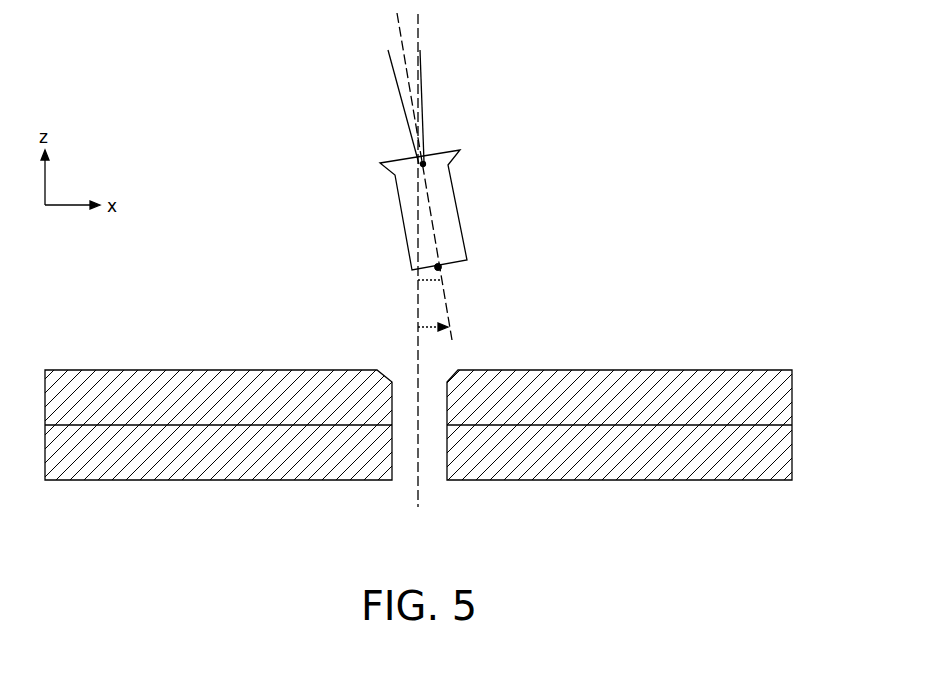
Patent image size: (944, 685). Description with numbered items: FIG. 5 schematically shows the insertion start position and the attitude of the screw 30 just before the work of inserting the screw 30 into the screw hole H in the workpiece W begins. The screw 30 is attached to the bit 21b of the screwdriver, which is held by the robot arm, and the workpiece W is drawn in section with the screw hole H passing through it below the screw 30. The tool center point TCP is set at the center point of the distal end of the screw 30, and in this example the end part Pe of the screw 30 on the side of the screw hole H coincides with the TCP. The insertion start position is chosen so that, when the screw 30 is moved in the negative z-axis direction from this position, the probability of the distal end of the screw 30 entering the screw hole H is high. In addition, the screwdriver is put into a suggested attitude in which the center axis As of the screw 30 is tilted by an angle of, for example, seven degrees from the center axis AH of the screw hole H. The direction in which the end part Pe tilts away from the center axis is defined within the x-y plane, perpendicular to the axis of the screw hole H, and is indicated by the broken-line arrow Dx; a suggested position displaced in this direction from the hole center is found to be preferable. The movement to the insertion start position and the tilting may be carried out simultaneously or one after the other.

The bit 21b is at (355, 107).
The screw 30 is at (382, 214).
The workpiece W is at (449, 398).
The screw hole H is at (434, 464).
The end part Pe is at (498, 289).
The tool center point TCP is at (496, 303).
The center axis of the screw As is at (408, 173).
The center axis of the screw hole AH is at (433, 254).
The tilting direction arrow Dx is at (433, 337).